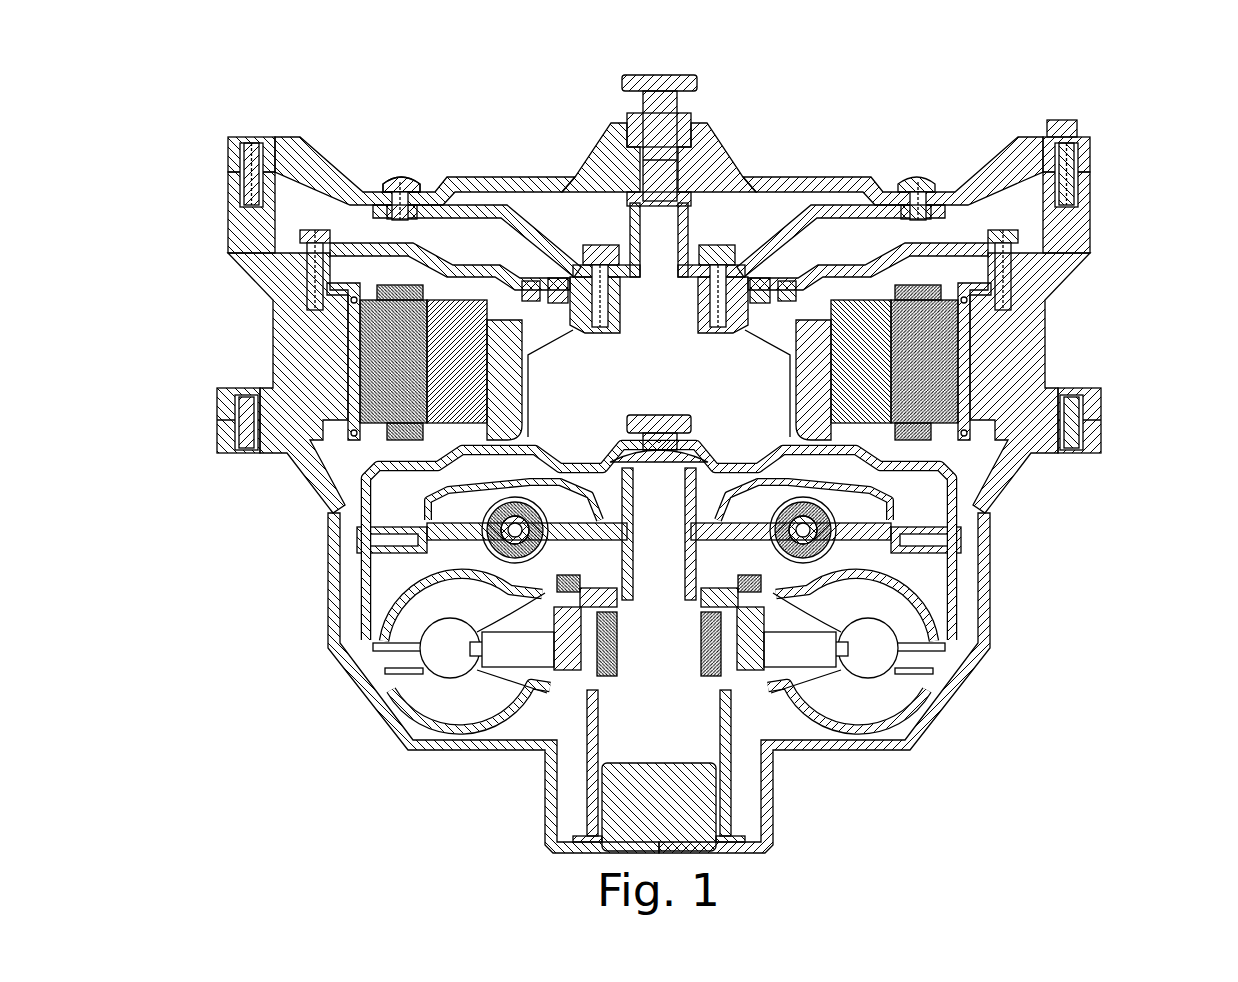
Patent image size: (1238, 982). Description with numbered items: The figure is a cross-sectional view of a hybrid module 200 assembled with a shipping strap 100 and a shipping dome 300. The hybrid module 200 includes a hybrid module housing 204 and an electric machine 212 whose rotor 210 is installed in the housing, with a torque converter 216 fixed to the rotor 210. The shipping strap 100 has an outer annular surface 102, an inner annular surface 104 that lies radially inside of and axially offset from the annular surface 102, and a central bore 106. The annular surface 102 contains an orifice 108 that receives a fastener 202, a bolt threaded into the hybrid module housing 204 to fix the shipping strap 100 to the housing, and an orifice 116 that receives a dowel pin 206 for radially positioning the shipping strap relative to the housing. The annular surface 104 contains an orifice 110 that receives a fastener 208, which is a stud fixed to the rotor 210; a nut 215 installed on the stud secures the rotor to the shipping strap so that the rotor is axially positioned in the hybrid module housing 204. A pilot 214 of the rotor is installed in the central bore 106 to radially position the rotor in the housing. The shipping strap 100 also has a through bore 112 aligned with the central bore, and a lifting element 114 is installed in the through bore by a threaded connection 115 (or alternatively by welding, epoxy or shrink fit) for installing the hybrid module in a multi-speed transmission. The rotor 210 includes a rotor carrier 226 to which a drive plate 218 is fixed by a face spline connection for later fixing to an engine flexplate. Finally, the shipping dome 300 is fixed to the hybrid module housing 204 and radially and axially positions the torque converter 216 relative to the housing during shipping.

The shipping strap 100 is at (712, 160).
The annular surface 102 is at (1013, 137).
The annular surface 104 is at (943, 192).
The central bore 106 is at (573, 192).
The orifice 108 is at (1088, 143).
The orifice 110 is at (915, 190).
The through bore 112 is at (680, 110).
The lifting element 114 is at (660, 75).
The threaded connection 115 is at (614, 123).
The orifice 116 is at (258, 140).
The hybrid module 200 is at (654, 430).
The fastener 202 is at (1062, 120).
The hybrid module housing 204 is at (1040, 270).
The dowel pin 206 is at (228, 178).
The fastener 208 is at (400, 190).
The rotor 210 is at (310, 445).
The electric machine 212 is at (262, 452).
The pilot 214 is at (610, 140).
The nut 215 is at (388, 182).
The torque converter 216 is at (400, 735).
The drive plate 218 is at (820, 205).
The rotor carrier 226 is at (352, 445).
The shipping dome 300 is at (906, 750).